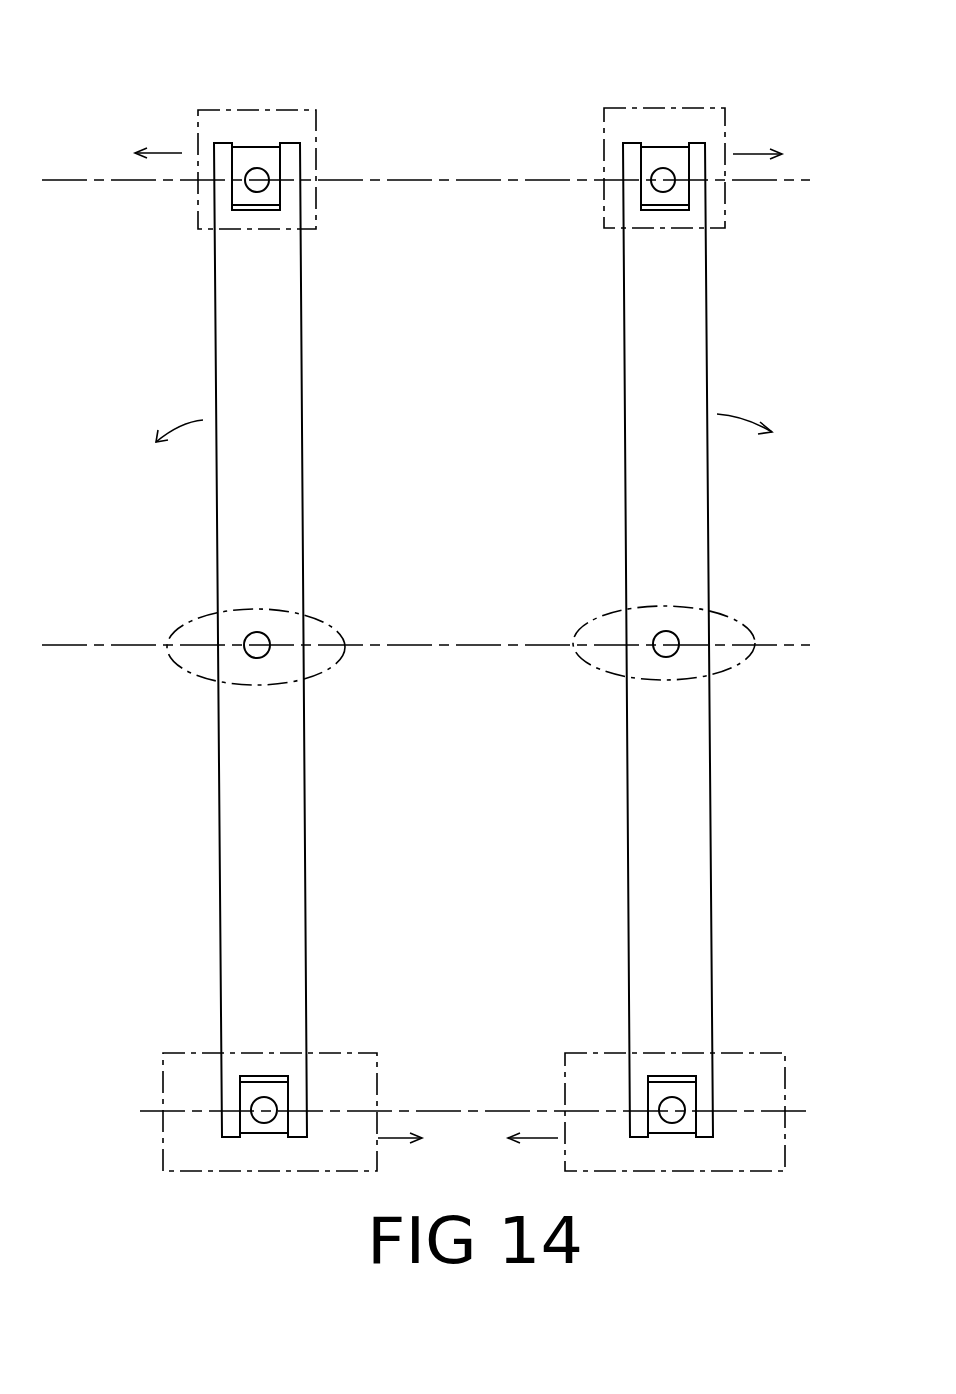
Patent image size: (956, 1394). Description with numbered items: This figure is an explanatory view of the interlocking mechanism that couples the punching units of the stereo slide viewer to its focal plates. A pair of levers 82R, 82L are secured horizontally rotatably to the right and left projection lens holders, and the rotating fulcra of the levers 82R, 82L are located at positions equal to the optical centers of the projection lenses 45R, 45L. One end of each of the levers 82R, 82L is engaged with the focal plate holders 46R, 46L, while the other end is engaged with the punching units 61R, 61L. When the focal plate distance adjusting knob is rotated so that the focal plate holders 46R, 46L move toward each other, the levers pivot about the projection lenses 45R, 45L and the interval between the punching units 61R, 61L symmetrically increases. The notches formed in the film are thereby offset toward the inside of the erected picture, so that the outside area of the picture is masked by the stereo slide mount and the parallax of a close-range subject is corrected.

The punching unit 61L is at (247, 110).
The punching unit 61R is at (657, 108).
The projection lens 45L is at (187, 625).
The projection lens 45R is at (718, 612).
The lever 82L is at (227, 800).
The lever 82R is at (694, 810).
The focal plate holder 46L is at (163, 1053).
The focal plate holder 46R is at (783, 1087).